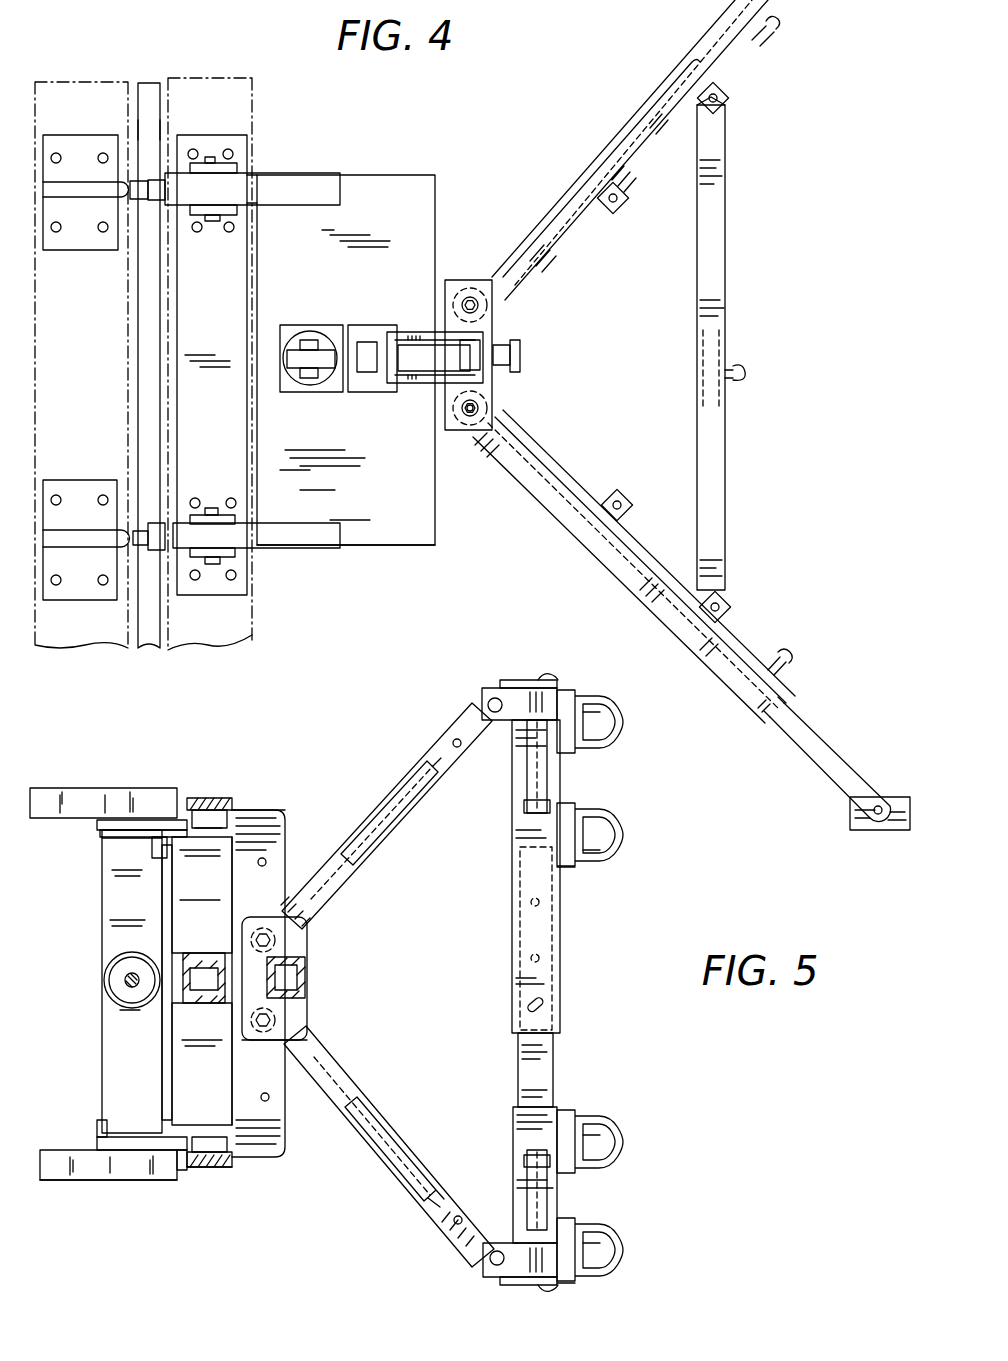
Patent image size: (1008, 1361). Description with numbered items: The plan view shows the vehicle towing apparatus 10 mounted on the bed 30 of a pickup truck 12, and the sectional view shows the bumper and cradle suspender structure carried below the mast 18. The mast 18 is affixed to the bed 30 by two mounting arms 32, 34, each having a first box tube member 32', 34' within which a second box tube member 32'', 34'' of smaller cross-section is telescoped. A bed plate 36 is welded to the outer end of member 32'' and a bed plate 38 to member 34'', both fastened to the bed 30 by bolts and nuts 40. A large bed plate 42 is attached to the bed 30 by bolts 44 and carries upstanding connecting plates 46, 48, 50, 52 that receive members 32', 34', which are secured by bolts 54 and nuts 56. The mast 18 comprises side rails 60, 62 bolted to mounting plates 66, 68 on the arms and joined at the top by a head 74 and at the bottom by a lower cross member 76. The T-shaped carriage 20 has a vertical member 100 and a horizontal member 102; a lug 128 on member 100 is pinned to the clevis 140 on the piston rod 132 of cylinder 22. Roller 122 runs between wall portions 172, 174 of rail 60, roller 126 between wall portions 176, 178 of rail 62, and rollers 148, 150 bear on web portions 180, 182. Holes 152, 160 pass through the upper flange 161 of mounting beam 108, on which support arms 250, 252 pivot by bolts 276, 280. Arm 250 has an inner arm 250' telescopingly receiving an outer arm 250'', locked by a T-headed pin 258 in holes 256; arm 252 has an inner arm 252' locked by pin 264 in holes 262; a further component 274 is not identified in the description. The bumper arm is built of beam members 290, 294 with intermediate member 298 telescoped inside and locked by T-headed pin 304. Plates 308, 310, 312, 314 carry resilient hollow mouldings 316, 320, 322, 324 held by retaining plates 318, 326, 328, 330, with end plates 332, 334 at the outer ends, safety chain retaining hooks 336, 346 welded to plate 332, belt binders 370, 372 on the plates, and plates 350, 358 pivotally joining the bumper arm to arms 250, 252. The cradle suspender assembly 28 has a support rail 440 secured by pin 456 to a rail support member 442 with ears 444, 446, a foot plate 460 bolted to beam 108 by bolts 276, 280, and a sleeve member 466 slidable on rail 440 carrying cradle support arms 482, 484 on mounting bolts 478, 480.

In FIG. 4, the towing apparatus 10 is at (378, 175).
In FIG. 4, the pickup truck 12 is at (232, 78).
In FIG. 4, the mast 18 is at (378, 545).
In FIG. 5, the mast 18 is at (208, 1170).
In FIG. 5, the carriage 20 is at (172, 1024).
In FIG. 4, the cylinder 22 is at (302, 340).
In FIG. 5, the cylinder 22 is at (115, 960).
In FIG. 4, the cradle suspender assembly 28 is at (735, 345).
In FIG. 4, the bed 30 is at (200, 85).
In FIG. 4, the mounting arm 32 is at (101, 410).
In FIG. 5, the mounting arm 32 is at (105, 1189).
In FIG. 4, the first box tube member 32' is at (118, 584).
In FIG. 4, the second box tube member 32'' is at (86, 524).
In FIG. 4, the mounting arm 34 is at (161, 363).
In FIG. 5, the mounting arm 34 is at (103, 784).
In FIG. 4, the first box tube member 34' is at (220, 145).
In FIG. 4, the second box tube member 34'' is at (86, 176).
In FIG. 4, the bed plate 36 is at (52, 480).
In FIG. 4, the bed plate 38 is at (52, 140).
In FIG. 4, the nuts 40 is at (102, 153).
In FIG. 4, the large bed plate 42 is at (196, 332).
In FIG. 4, the bolts 44 is at (228, 148).
In FIG. 4, the connecting plate 46 is at (247, 178).
In FIG. 4, the connecting plate 48 is at (240, 214).
In FIG. 4, the connecting plate 50 is at (237, 517).
In FIG. 4, the connecting plate 52 is at (240, 551).
In FIG. 4, the bolts 54 is at (237, 168).
In FIG. 4, the nuts 56 is at (222, 218).
In FIG. 5, the side rail 60 is at (130, 1180).
In FIG. 5, the side rail 62 is at (192, 798).
In FIG. 5, the mounting plate 66 is at (97, 1145).
In FIG. 5, the mounting plate 68 is at (100, 825).
In FIG. 4, the head 74 is at (355, 229).
In FIG. 5, the lower cross member 76 is at (117, 1106).
In FIG. 5, the vertical member 100 is at (206, 954).
In FIG. 5, the horizontal member 102 is at (186, 897).
In FIG. 5, the mounting beam 108 is at (290, 815).
In FIG. 5, the roller 122 is at (225, 1167).
In FIG. 5, the roller 126 is at (214, 805).
In FIG. 4, the lug 128 is at (310, 368).
In FIG. 5, the piston rod 132 is at (125, 986).
In FIG. 4, the clevis 140 is at (316, 345).
In FIG. 5, the roller 148 is at (172, 1108).
In FIG. 5, the roller 150 is at (150, 840).
In FIG. 5, the hole 152 is at (269, 1097).
In FIG. 5, the hole 160 is at (266, 862).
In FIG. 5, the upper horizontal flange 161 is at (233, 897).
In FIG. 5, the wall portion 172 is at (185, 1175).
In FIG. 5, the wall portion 174 is at (232, 1158).
In FIG. 5, the wall portion 176 is at (175, 818).
In FIG. 5, the wall portion 178 is at (232, 810).
In FIG. 5, the web portion 180 is at (105, 1130).
In FIG. 5, the web portion 182 is at (118, 835).
In FIG. 5, the support arm 250 is at (389, 1146).
In FIG. 5, the inner arm 250' is at (381, 1129).
In FIG. 5, the outer arm 250'' is at (474, 1197).
In FIG. 5, the support arm 252 is at (393, 816).
In FIG. 5, the inner arm 252' is at (334, 920).
In FIG. 5, the holes 256 is at (455, 1222).
In FIG. 5, the T-headed pin 258 is at (425, 1200).
In FIG. 5, the holes 262 is at (489, 705).
In FIG. 5, the T-headed pin 264 is at (453, 743).
In FIG. 5, the upper arm slide 274 is at (395, 800).
In FIG. 5, the bolt 276 is at (295, 1015).
In FIG. 5, the bolt 280 is at (300, 960).
In FIG. 5, the box tube beam member 290 is at (515, 862).
In FIG. 5, the box tube beam member 294 is at (515, 1107).
In FIG. 5, the intermediate box tube beam member 298 is at (554, 1075).
In FIG. 5, the T-headed pin 304 is at (547, 1002).
In FIG. 5, the steel plate 308 is at (605, 1272).
In FIG. 5, the steel plate 310 is at (553, 1175).
In FIG. 5, the steel plate 312 is at (565, 870).
In FIG. 5, the steel plate 314 is at (550, 760).
In FIG. 5, the bumper moulding 316 is at (620, 1230).
In FIG. 5, the retaining plate 318 is at (615, 1243).
In FIG. 5, the hollow moulding 320 is at (615, 1115).
In FIG. 5, the hollow moulding 322 is at (617, 825).
In FIG. 5, the hollow moulding 324 is at (605, 695).
In FIG. 5, the retaining plate 326 is at (620, 1135).
In FIG. 5, the retaining plate 328 is at (610, 850).
In FIG. 5, the retaining plate 330 is at (620, 714).
In FIG. 5, the end plate 332 is at (500, 1285).
In FIG. 5, the end plate 334 is at (505, 680).
In FIG. 5, the safety chain retaining hook 336 is at (545, 1288).
In FIG. 5, the retaining hook 346 is at (550, 680).
In FIG. 5, the steel plate 350 is at (483, 1265).
In FIG. 5, the steel plate 358 is at (482, 688).
In FIG. 5, the belt binder 370 is at (560, 1200).
In FIG. 5, the belt binder 372 is at (555, 778).
In FIG. 4, the cradle suspender support rail 440 is at (520, 354).
In FIG. 5, the cradle suspender support rail 440 is at (310, 984).
In FIG. 4, the rail support member 442 is at (365, 340).
In FIG. 4, the ear 444 is at (427, 382).
In FIG. 4, the ear 446 is at (422, 332).
In FIG. 4, the pin 456 is at (495, 332).
In FIG. 5, the foot plate 460 is at (310, 1035).
In FIG. 4, the sleeve member 466 is at (487, 396).
In FIG. 4, the support arm mounting bolt 478 is at (486, 415).
In FIG. 4, the support arm mounting bolt 480 is at (473, 300).
In FIG. 4, the cradle support arm 482 is at (575, 523).
In FIG. 4, the cradle support arm 484 is at (628, 103).